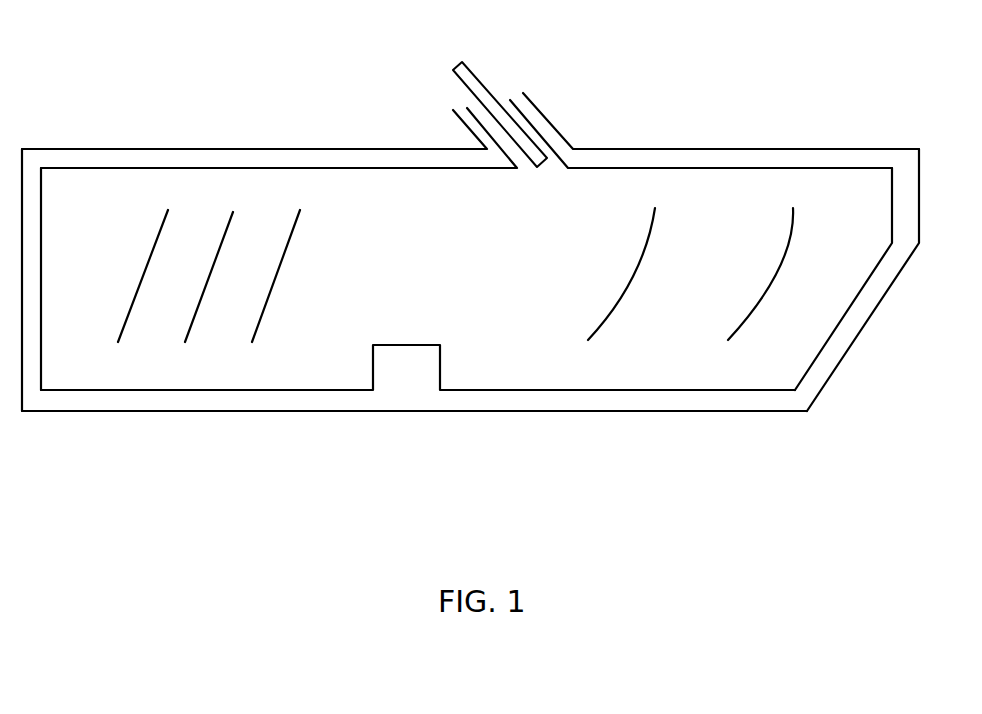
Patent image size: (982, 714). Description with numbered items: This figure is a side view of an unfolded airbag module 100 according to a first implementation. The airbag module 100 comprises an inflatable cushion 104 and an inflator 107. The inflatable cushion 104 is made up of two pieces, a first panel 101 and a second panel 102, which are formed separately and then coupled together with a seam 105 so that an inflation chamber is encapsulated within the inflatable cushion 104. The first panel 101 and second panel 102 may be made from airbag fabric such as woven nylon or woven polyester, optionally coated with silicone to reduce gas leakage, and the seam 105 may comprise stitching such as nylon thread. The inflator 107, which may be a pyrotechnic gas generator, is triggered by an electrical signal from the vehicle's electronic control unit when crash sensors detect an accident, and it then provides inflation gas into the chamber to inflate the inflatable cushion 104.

The airbag module 100 is at (490, 269).
The first panel 101 is at (278, 157).
The second panel 102 is at (213, 412).
The inflatable cushion 104 is at (87, 200).
The seam 105 is at (718, 168).
The inflator 107 is at (472, 82).